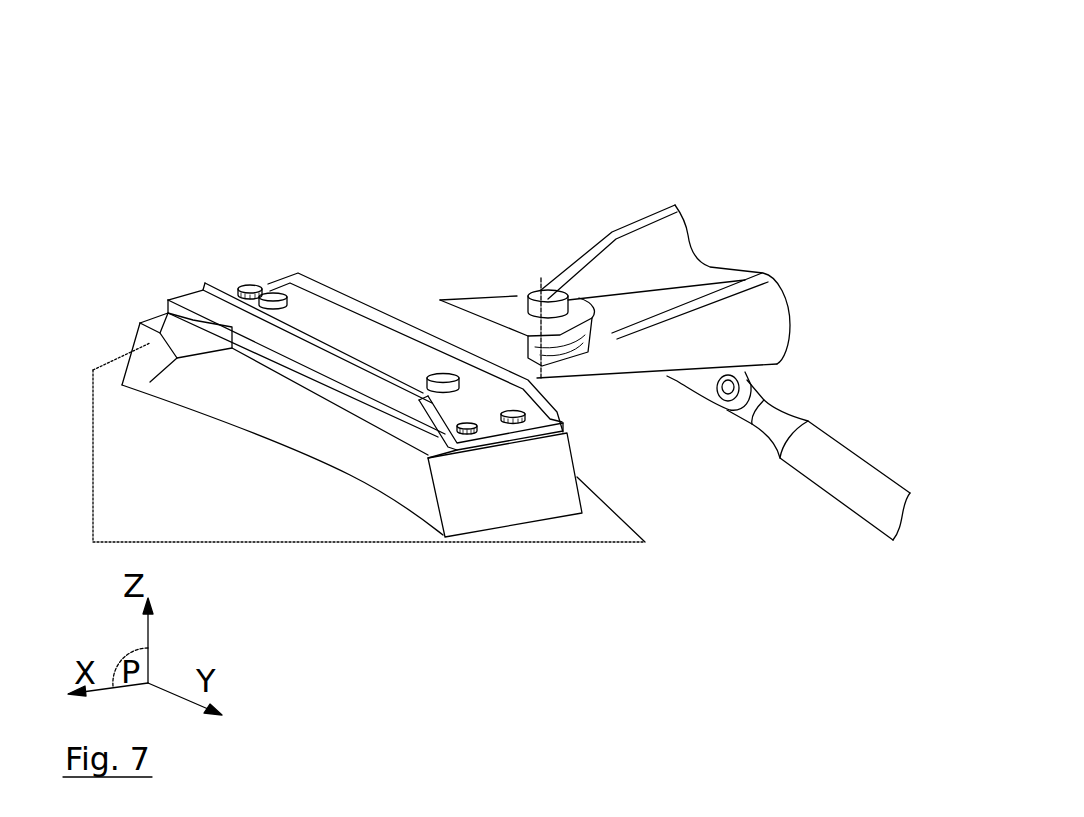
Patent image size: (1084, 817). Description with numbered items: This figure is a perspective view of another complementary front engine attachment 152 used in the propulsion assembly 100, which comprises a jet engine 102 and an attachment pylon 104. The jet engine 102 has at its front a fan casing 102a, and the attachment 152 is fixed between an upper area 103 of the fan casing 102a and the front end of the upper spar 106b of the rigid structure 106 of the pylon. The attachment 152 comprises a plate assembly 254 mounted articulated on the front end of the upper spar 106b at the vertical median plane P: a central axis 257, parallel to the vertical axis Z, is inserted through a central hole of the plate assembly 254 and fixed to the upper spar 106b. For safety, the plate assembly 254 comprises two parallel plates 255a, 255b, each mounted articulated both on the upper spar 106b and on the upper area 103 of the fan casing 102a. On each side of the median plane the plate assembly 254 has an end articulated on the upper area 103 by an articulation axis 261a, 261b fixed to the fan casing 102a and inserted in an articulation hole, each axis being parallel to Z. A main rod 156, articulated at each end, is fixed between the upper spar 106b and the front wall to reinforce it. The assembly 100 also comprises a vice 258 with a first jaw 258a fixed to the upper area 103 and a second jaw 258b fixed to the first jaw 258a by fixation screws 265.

The propulsion assembly 100 is at (180, 65).
The jet engine 102 is at (628, 640).
The fan casing 102a is at (192, 513).
The upper area 103 is at (383, 507).
The attachment pylon 104 is at (785, 188).
The rigid structure 106 is at (845, 238).
The upper spar 106b is at (772, 307).
The complementary front engine attachment 152 is at (210, 192).
The main rod 156 is at (868, 488).
The plate assembly 254 is at (435, 220).
The plate 255a is at (512, 310).
The plate 255b is at (545, 393).
The central axis 257 is at (550, 296).
The vice 258 is at (728, 562).
The first jaw 258a is at (573, 478).
The second jaw 258b is at (205, 297).
The articulation axis 261a is at (430, 381).
The articulation axis 261b is at (273, 293).
The fixation screws 265 is at (242, 285).